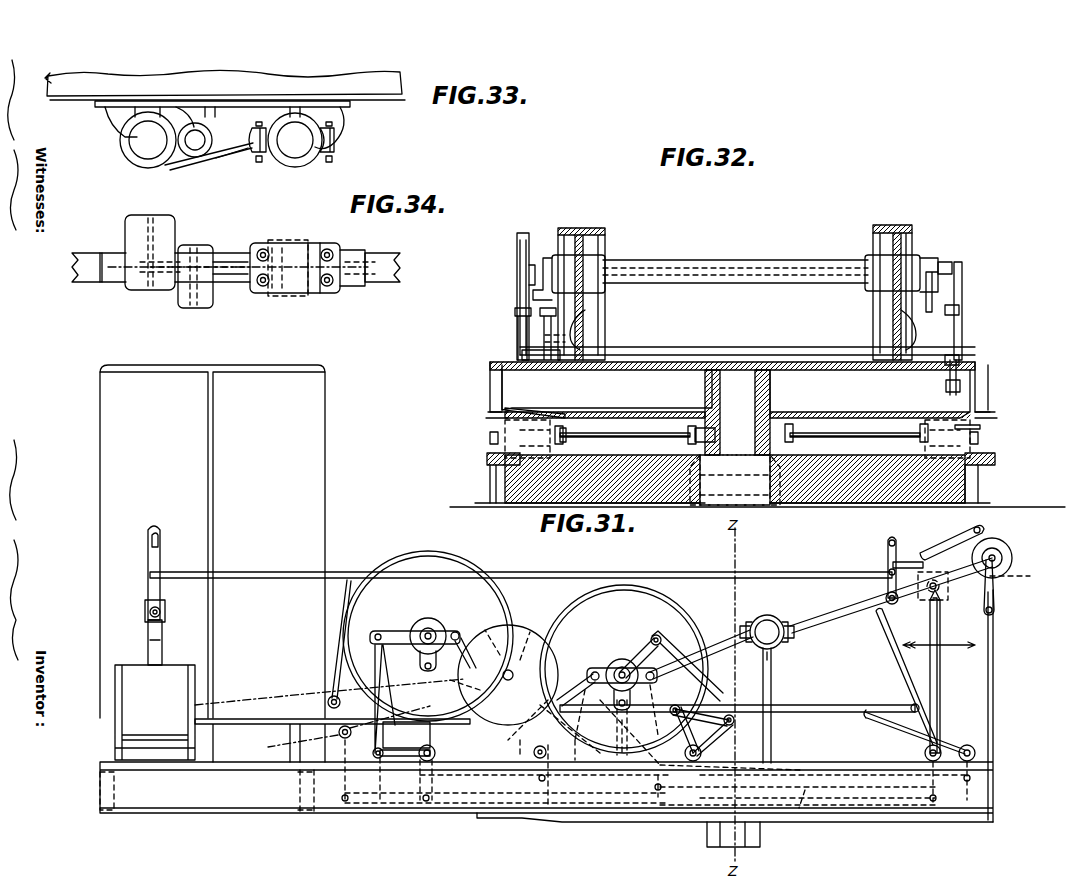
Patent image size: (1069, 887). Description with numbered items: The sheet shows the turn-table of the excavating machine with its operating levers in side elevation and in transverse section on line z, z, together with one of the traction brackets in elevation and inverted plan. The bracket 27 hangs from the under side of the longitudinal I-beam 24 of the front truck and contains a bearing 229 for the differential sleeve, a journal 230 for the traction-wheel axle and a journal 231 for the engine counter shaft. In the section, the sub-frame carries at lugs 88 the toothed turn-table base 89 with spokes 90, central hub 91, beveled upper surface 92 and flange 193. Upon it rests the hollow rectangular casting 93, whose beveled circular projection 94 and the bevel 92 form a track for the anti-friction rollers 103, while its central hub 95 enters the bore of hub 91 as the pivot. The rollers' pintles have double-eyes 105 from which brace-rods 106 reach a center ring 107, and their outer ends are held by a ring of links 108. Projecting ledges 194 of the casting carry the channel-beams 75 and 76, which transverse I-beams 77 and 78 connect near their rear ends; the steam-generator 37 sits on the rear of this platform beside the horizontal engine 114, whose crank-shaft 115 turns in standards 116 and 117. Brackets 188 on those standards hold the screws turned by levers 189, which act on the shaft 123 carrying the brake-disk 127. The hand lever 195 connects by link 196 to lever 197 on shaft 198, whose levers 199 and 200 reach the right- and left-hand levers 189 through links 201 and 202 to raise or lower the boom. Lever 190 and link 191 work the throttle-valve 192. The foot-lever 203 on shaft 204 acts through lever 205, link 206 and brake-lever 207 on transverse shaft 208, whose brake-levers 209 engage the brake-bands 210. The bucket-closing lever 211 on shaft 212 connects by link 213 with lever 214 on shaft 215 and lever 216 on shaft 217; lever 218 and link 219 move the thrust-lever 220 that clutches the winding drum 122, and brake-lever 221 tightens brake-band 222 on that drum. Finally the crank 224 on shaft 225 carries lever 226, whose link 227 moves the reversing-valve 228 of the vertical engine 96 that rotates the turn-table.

In FIG. 33, the I-beam 24 is at (44, 84).
In FIG. 34, the I-beam 24 is at (402, 267).
In FIG. 33, the bracket 27 is at (230, 160).
In FIG. 34, the bracket 27 is at (230, 248).
In FIG. 31, the steam-generator 37 is at (212, 541).
In FIG. 32, the channel-beam 75 is at (988, 383).
In FIG. 32, the channel-beam 76 is at (488, 383).
In FIG. 31, the channel-beam 76 is at (236, 816).
In FIG. 31, the transverse I-beam 77 is at (108, 788).
In FIG. 31, the transverse I-beam 78 is at (300, 788).
In FIG. 32, the lugs 88 is at (480, 500).
In FIG. 32, the turn-table base 89 is at (490, 476).
In FIG. 32, the spokes 90 is at (593, 478).
In FIG. 32, the central hub 91 is at (735, 480).
In FIG. 32, the beveled upper surface 92 is at (882, 478).
In FIG. 32, the rectangular casting 93 is at (845, 438).
In FIG. 31, the rectangular casting 93 is at (485, 819).
In FIG. 32, the beveled circular projection 94 is at (577, 418).
In FIG. 31, the beveled circular projection 94 is at (530, 820).
In FIG. 32, the central hub 95 is at (735, 461).
In FIG. 31, the central hub 95 is at (706, 842).
In FIG. 31, the double-cylinder vertical steam engine 96 is at (912, 570).
In FIG. 32, the anti-friction rollers 103 is at (490, 434).
In FIG. 32, the double-eyes 105 is at (574, 440).
In FIG. 32, the brace-rods 106 is at (744, 439).
In FIG. 32, the center ring 107 is at (680, 444).
In FIG. 32, the links 108 is at (985, 428).
In FIG. 31, the horizontal steam engine 114 is at (155, 690).
In FIG. 31, the crank-shaft 115 is at (504, 675).
In FIG. 32, the standard 116 is at (870, 316).
In FIG. 32, the standard 117 is at (597, 315).
In FIG. 31, the standard 117 is at (866, 660).
In FIG. 31, the winding drum 122 is at (497, 605).
In FIG. 32, the shaft 123 is at (709, 283).
In FIG. 31, the brake-disk 127 is at (683, 602).
In FIG. 31, the brackets 188 is at (624, 684).
In FIG. 32, the levers 189 is at (531, 238).
In FIG. 31, the levers 189 is at (585, 684).
In FIG. 31, the lever 190 is at (888, 553).
In FIG. 31, the link 191 is at (570, 572).
In FIG. 31, the throttle-valve 192 is at (148, 588).
In FIG. 32, the flange 193 is at (488, 460).
In FIG. 32, the projecting ledges 194 is at (488, 416).
In FIG. 31, the hand lever 195 is at (879, 632).
In FIG. 31, the link 196 is at (816, 708).
In FIG. 32, the lever 197 is at (580, 328).
In FIG. 31, the lever 197 is at (673, 714).
In FIG. 32, the shaft 198 is at (716, 346).
In FIG. 31, the shaft 198 is at (702, 752).
In FIG. 32, the lever 199 is at (520, 334).
In FIG. 31, the lever 199 is at (727, 735).
In FIG. 32, the lever 200 is at (947, 378).
In FIG. 31, the lever 200 is at (700, 748).
In FIG. 32, the link 201 is at (517, 290).
In FIG. 31, the link 201 is at (711, 658).
In FIG. 32, the link 202 is at (962, 324).
In FIG. 31, the link 202 is at (638, 727).
In FIG. 31, the foot-lever 203 is at (896, 727).
In FIG. 31, the shaft 204 is at (968, 744).
In FIG. 31, the lever 205 is at (975, 773).
In FIG. 31, the link 206 is at (873, 782).
In FIG. 31, the brake-lever 207 is at (538, 776).
In FIG. 31, the transverse shaft 208 is at (550, 750).
In FIG. 31, the brake-levers 209 is at (507, 789).
In FIG. 31, the brake-bands 210 is at (632, 585).
In FIG. 31, the bucket-closing lever 211 is at (942, 668).
In FIG. 31, the shaft 212 is at (924, 752).
In FIG. 31, the link 213 is at (803, 815).
In FIG. 31, the lever 214 is at (422, 779).
In FIG. 31, the shaft 215 is at (436, 750).
In FIG. 31, the lever 216 is at (350, 778).
In FIG. 31, the shaft 217 is at (339, 733).
In FIG. 31, the lever 218 is at (405, 739).
In FIG. 31, the link 219 is at (382, 701).
In FIG. 31, the thrust-lever 220 is at (398, 632).
In FIG. 31, the brake-lever 221 is at (330, 705).
In FIG. 31, the brake-band 222 is at (332, 658).
In FIG. 31, the crank 224 is at (995, 598).
In FIG. 31, the shaft 225 is at (1012, 559).
In FIG. 31, the lever 226 is at (984, 533).
In FIG. 31, the link 227 is at (954, 536).
In FIG. 31, the reversing-valve 228 is at (1021, 576).
In FIG. 33, the bearing 229 is at (296, 137).
In FIG. 34, the bearing 229 is at (307, 268).
In FIG. 33, the journal 230 is at (222, 134).
In FIG. 33, the journal 231 is at (196, 162).